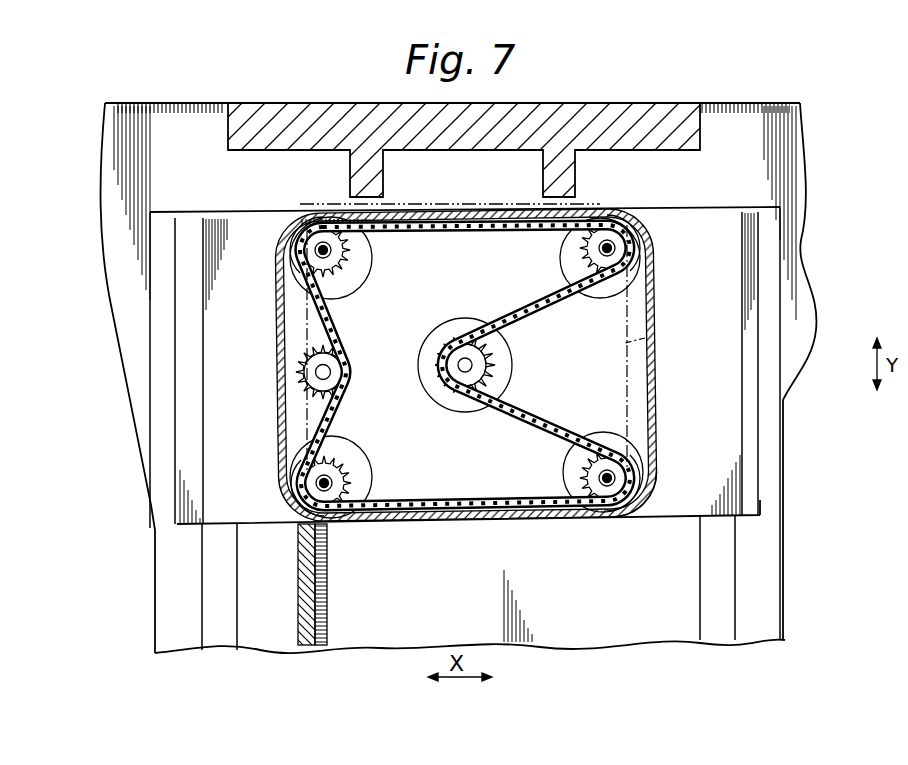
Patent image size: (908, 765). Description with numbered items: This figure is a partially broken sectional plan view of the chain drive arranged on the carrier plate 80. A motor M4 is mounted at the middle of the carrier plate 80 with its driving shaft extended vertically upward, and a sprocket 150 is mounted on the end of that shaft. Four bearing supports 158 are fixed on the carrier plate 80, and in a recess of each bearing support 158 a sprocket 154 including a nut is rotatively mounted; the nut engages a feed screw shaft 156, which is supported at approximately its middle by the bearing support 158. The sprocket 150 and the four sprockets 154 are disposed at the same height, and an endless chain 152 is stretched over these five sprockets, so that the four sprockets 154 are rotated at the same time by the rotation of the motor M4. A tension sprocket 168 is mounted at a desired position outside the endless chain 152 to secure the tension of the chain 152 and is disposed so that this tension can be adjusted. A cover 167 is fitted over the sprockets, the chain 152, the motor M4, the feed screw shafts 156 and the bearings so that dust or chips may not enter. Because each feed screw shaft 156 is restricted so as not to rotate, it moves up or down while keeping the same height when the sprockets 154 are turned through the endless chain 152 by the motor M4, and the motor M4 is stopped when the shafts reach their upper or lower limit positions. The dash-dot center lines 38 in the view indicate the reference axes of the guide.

The tension sprocket 168 is at (311, 362).
The motor M4 is at (508, 346).
The sprocket 150 is at (484, 369).
The endless chain 152 is at (537, 418).
The guide rail center line 38 is at (645, 338).
The cover 167 is at (656, 356).
The sprocket 154 is at (608, 460).
The feed screw shaft 156 is at (628, 462).
The bearing support 158 is at (655, 488).
The carrier plate 80 is at (742, 490).